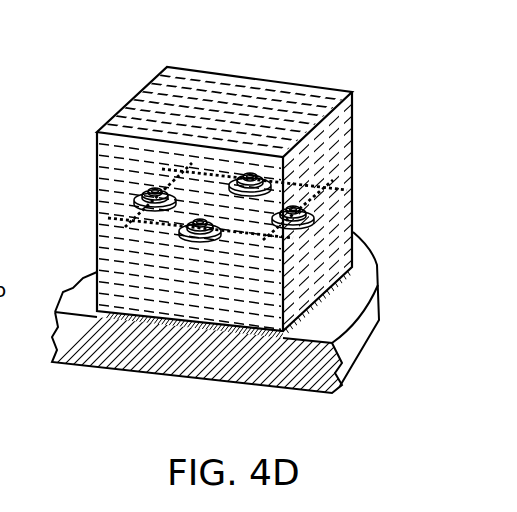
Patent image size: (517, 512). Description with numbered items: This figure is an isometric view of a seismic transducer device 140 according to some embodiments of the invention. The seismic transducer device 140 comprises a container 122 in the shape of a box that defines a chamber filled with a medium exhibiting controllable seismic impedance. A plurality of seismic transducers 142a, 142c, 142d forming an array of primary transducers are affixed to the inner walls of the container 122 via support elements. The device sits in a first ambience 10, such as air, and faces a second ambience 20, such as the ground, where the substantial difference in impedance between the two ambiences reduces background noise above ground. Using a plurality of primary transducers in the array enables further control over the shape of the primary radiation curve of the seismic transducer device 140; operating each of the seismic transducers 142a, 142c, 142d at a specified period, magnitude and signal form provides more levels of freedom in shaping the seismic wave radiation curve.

The first ambience 10 is at (95, 82).
The second ambience 20 is at (167, 375).
The container 122 is at (181, 236).
The seismic transducer device 140 is at (326, 63).
The seismic transducer 142a is at (136, 201).
The seismic transducer 142c is at (259, 179).
The seismic transducer 142d is at (313, 213).